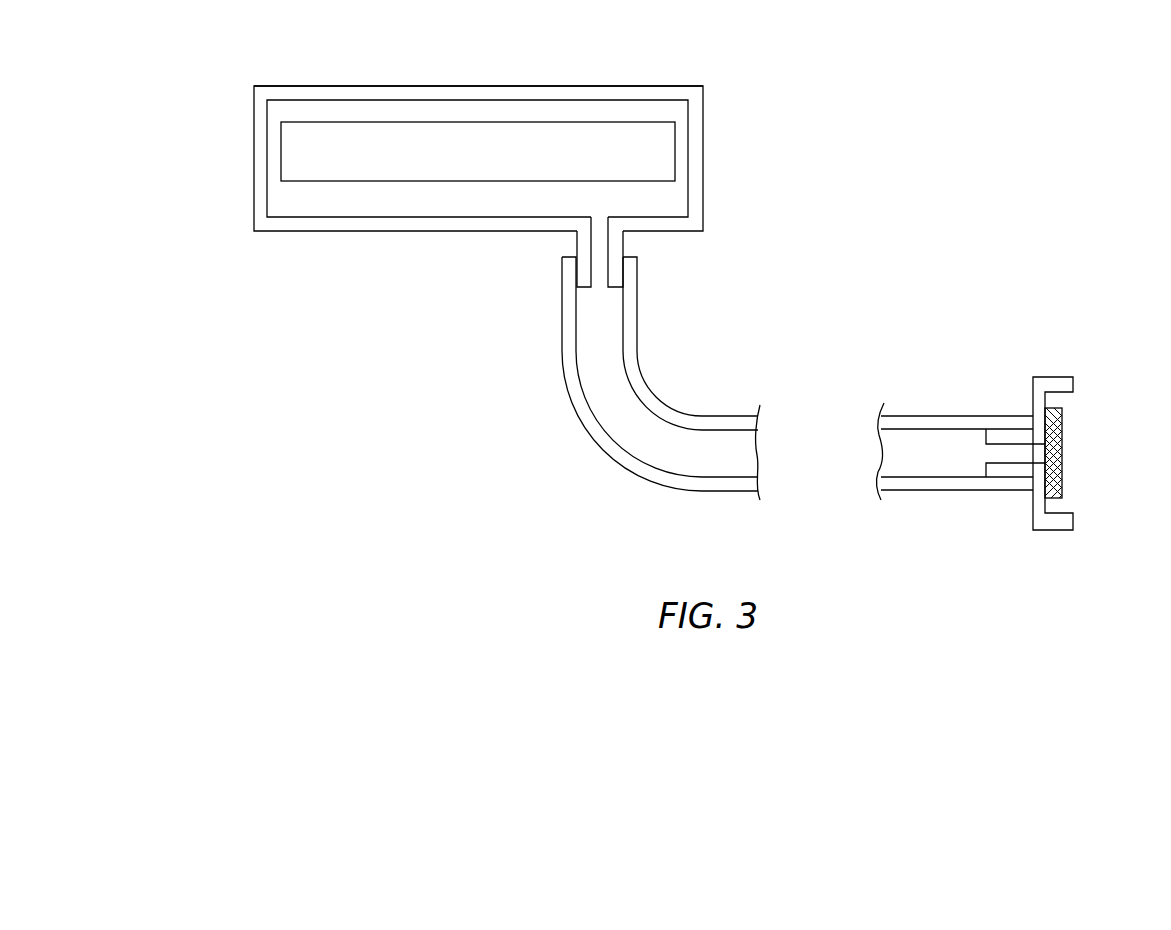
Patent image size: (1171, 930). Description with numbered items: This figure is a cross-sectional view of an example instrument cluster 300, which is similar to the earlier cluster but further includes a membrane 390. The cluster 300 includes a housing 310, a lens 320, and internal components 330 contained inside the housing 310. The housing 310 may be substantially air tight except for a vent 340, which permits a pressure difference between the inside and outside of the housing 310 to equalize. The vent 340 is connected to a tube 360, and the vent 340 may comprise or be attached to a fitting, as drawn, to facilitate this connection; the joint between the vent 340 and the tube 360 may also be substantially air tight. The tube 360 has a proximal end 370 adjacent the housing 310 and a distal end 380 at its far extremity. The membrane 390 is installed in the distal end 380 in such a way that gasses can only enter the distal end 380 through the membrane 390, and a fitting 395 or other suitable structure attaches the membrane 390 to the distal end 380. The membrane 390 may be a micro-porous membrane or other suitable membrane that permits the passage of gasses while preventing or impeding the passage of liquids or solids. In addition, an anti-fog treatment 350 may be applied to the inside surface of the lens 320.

The instrument cluster 300 is at (972, 182).
The housing 310 is at (703, 163).
The lens 320 is at (405, 86).
The internal components 330 is at (376, 163).
The vent 340 is at (601, 222).
The anti-fog treatment 350 is at (530, 105).
The tube 360 is at (633, 468).
The proximal end 370 is at (566, 256).
The distal end 380 is at (1033, 497).
The membrane 390 is at (1062, 460).
The fitting 395 is at (1053, 377).